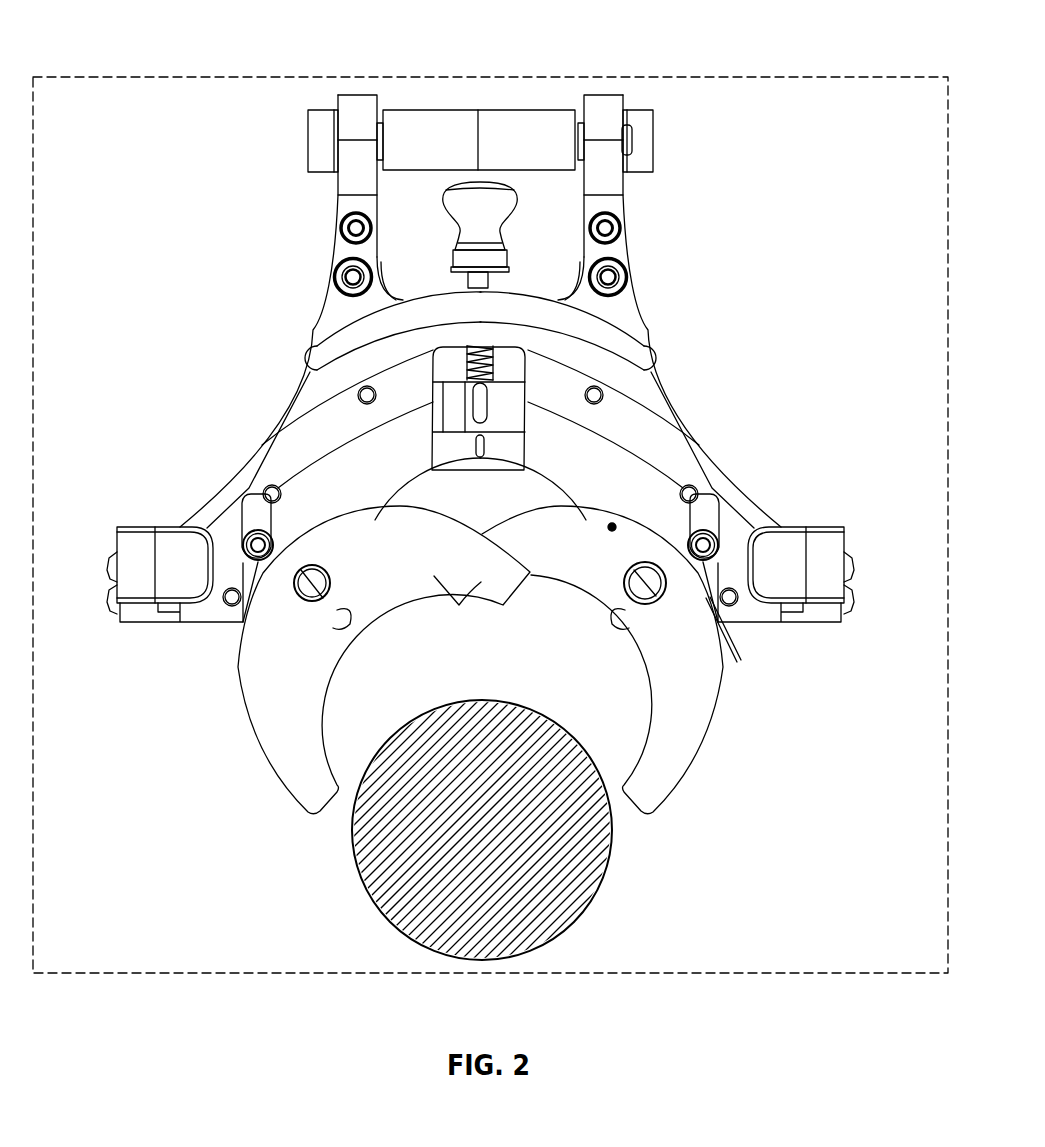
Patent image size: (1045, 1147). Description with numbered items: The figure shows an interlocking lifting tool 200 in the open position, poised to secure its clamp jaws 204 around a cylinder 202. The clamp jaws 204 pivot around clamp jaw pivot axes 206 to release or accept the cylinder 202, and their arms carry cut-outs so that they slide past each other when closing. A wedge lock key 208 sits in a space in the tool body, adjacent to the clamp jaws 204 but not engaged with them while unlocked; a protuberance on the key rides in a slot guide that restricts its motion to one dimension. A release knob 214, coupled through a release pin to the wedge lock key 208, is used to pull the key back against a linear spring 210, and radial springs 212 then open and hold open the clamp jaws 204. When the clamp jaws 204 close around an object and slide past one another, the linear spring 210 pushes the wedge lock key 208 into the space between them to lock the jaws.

The interlocking lifting tool 200 is at (872, 77).
The cylinder 202 is at (601, 888).
The clamp jaws 204 is at (274, 723).
The clamp jaw pivot axes 206 is at (331, 586).
The wedge lock key 208 is at (504, 397).
The linear spring 210 is at (461, 367).
The radial springs 212 is at (256, 528).
The release knob 214 is at (504, 226).